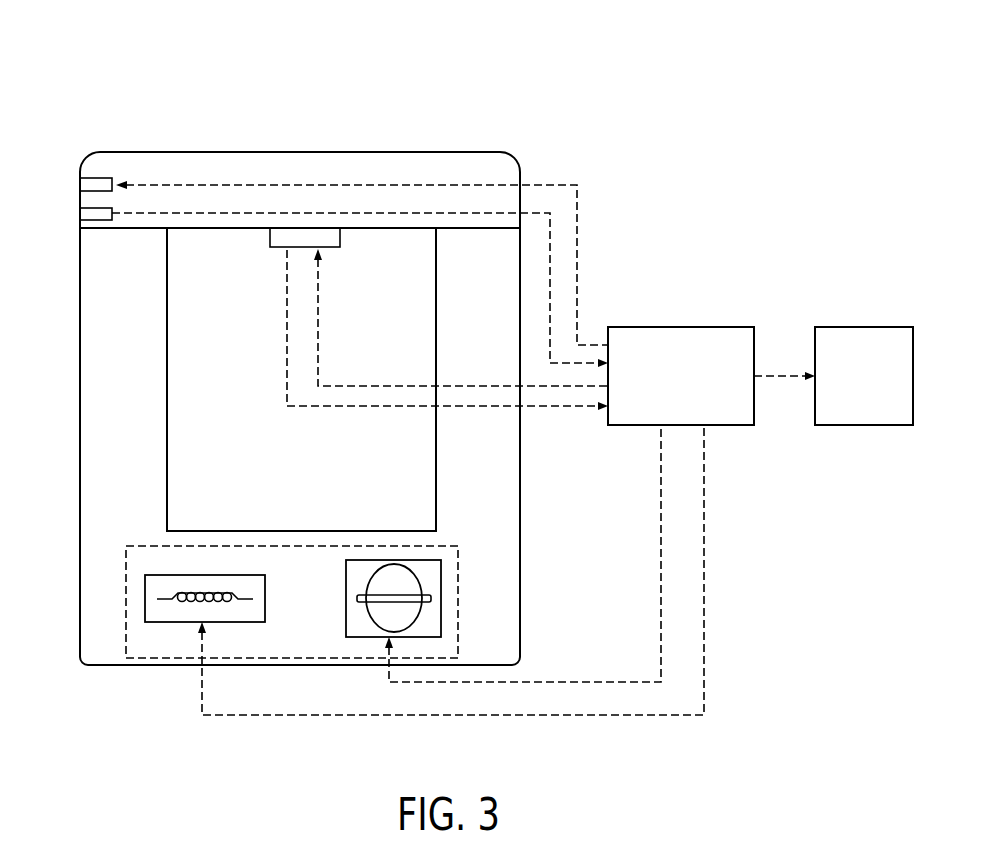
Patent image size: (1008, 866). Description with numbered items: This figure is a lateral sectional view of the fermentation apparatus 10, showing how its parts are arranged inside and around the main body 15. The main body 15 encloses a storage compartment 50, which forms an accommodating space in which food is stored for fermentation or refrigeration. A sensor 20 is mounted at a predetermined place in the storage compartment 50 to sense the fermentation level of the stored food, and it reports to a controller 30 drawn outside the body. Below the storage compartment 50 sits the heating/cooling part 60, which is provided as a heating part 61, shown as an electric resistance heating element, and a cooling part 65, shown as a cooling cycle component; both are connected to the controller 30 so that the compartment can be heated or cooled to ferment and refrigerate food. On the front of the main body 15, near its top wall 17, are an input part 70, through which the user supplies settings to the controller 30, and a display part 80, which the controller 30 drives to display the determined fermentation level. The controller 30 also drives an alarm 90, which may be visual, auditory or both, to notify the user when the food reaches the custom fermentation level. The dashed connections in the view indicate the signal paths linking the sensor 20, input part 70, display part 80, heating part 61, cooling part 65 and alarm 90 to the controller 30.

The fermentation apparatus 10 is at (112, 64).
The main body 15 is at (81, 371).
The top wall 17 is at (440, 151).
The sensor 20 is at (296, 236).
The controller 30 is at (680, 326).
The storage compartment 50 is at (311, 489).
The heating/cooling part 60 is at (126, 602).
The heating part 61 is at (246, 622).
The cooling part 65 is at (366, 638).
The input part 70 is at (81, 213).
The display part 80 is at (81, 184).
The alarm 90 is at (866, 326).